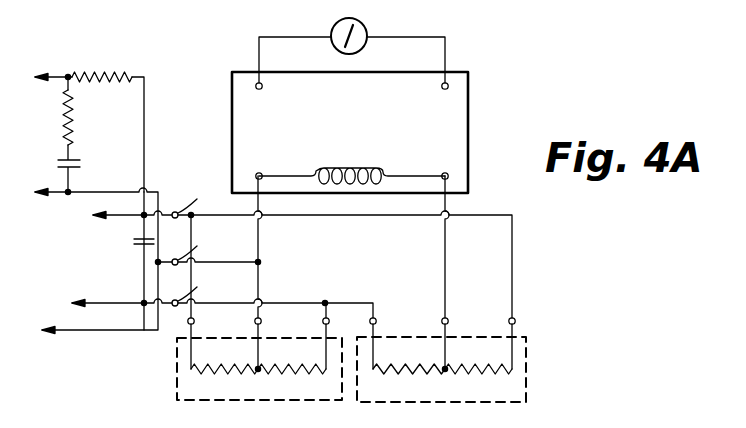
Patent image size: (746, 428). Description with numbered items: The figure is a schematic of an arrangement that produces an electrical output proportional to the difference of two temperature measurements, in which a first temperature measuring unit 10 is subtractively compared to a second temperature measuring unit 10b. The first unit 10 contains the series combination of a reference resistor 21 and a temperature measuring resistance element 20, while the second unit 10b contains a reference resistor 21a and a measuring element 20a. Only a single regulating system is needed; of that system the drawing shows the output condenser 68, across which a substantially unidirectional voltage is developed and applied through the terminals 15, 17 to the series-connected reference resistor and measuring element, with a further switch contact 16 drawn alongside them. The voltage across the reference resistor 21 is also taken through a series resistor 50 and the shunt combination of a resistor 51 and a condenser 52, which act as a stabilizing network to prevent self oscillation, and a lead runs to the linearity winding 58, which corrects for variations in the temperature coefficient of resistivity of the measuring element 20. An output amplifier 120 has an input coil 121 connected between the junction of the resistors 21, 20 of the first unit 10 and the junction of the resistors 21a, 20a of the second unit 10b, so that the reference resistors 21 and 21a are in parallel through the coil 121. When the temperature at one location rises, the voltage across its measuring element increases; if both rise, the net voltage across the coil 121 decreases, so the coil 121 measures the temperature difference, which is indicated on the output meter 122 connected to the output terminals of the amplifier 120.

The temperature measuring unit 10 is at (195, 404).
The second temperature measuring unit 10b is at (527, 366).
The terminal 15 is at (193, 203).
The switch 16 is at (189, 251).
The terminal 17 is at (189, 293).
The temperature measuring resistance element 20 is at (302, 377).
The reference resistor 21 is at (234, 377).
The measuring element 20a is at (418, 377).
The reference resistor 21a is at (492, 377).
The series resistor 50 is at (105, 81).
The resistor 51 is at (75, 130).
The condenser 52 is at (80, 162).
The linearity winding 58 is at (44, 335).
The output condenser 68 is at (133, 244).
The output amplifier 120 is at (469, 126).
The input coil 121 is at (350, 185).
The output meter 122 is at (368, 26).